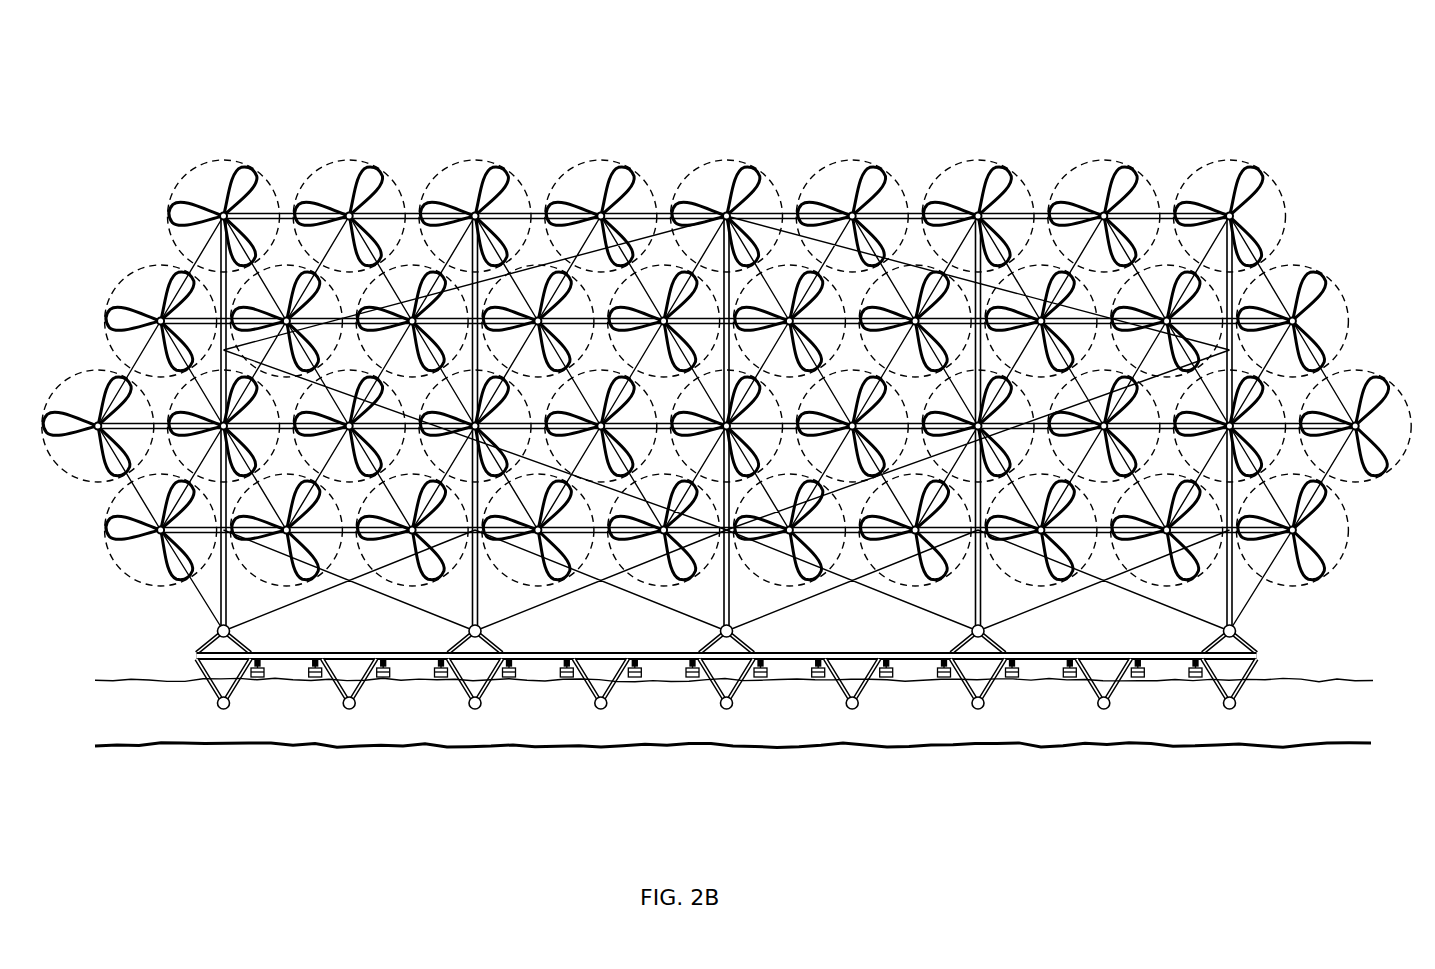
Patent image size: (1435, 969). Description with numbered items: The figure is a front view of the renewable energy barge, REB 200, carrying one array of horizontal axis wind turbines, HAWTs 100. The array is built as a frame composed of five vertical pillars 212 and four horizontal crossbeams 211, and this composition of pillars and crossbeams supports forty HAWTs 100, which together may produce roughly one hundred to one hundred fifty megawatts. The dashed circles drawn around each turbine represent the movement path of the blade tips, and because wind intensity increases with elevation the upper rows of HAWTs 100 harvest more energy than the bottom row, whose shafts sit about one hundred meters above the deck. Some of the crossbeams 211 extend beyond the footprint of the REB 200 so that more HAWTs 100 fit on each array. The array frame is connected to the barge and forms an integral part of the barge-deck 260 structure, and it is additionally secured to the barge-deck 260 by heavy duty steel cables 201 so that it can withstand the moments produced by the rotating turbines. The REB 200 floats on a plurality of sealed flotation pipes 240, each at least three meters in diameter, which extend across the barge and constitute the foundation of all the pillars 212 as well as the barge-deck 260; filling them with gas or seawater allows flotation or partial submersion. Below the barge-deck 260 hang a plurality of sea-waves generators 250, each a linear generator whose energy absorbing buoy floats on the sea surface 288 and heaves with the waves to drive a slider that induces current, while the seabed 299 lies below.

The horizontal axis wind turbine 100 is at (258, 176).
The renewable energy barge 200 is at (1273, 115).
The heavy duty steel cables 201 is at (1243, 630).
The crossbeams 211 is at (413, 210).
The pillars 212 is at (218, 607).
The flotation pipes 240 is at (1102, 702).
The sea-waves generator 250 is at (690, 680).
The barge-deck 260 is at (592, 652).
The sea surface 288 is at (190, 681).
The seabed 299 is at (250, 746).